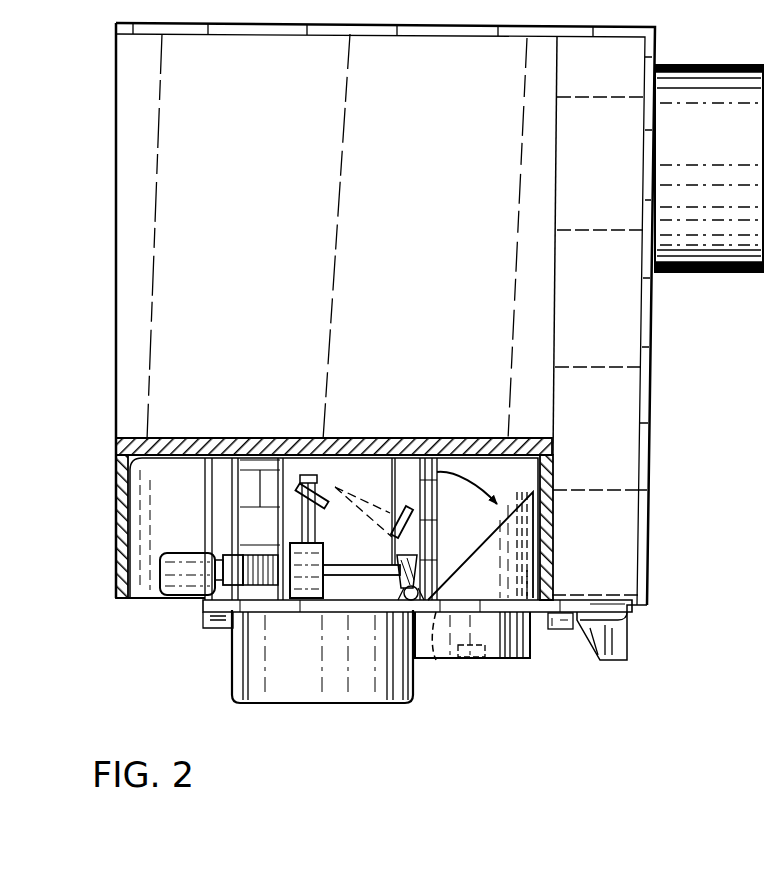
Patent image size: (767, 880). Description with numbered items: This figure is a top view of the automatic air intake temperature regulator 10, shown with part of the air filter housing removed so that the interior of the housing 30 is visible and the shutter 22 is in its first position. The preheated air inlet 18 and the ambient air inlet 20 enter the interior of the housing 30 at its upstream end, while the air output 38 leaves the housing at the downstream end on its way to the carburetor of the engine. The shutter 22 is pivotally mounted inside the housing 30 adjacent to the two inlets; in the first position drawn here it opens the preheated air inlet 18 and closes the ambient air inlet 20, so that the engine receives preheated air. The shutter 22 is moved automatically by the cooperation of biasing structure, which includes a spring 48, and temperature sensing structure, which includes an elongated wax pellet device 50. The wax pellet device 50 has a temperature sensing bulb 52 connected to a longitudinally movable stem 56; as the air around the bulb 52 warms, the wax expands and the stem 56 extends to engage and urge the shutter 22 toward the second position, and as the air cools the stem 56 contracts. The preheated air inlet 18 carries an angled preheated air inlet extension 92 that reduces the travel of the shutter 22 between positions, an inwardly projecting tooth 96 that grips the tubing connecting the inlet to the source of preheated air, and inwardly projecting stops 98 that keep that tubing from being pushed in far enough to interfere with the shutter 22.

The automatic air intake temperature regulator 10 is at (647, 625).
The preheated air inlet 18 is at (535, 645).
The ambient air inlet 20 is at (232, 670).
The shutter 22 is at (437, 462).
The housing 30 is at (111, 441).
The air output 38 is at (740, 273).
The spring 48 is at (330, 482).
The wax pellet device 50 is at (253, 567).
The temperature sensing bulb 52 is at (197, 582).
The stem 56 is at (369, 540).
The preheated air inlet extension 92 is at (528, 527).
The tooth 96 is at (482, 648).
The stops 98 is at (534, 580).